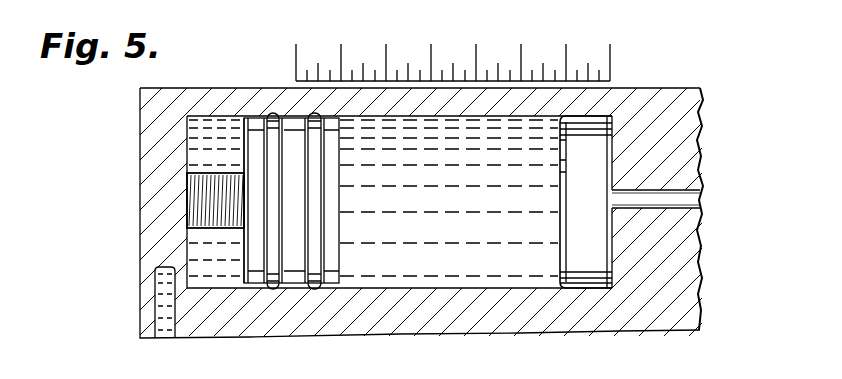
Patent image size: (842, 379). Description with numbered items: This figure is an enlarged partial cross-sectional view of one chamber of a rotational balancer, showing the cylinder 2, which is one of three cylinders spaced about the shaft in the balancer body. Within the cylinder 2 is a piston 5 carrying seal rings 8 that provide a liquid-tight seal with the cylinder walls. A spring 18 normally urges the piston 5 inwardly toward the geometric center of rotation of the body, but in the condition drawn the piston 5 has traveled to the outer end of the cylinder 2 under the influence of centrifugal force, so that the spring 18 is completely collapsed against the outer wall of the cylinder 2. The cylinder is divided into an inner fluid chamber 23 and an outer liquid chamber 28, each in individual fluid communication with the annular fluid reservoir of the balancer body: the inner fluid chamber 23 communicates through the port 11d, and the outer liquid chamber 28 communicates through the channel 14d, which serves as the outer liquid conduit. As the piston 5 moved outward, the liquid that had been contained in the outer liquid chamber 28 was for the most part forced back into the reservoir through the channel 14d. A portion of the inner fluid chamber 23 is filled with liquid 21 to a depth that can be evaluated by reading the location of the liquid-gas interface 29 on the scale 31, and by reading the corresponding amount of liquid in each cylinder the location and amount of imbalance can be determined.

The cylinder 2 is at (545, 287).
The piston 5 is at (333, 272).
The seal rings 8 is at (285, 270).
The port 11d is at (700, 190).
The channel 14d is at (165, 302).
The spring 18 is at (187, 168).
The liquid 21 is at (397, 268).
The inner fluid chamber 23 is at (602, 229).
The outer liquid chamber 28 is at (218, 276).
The liquid-gas interface 29 is at (560, 176).
The scale 31 is at (462, 50).